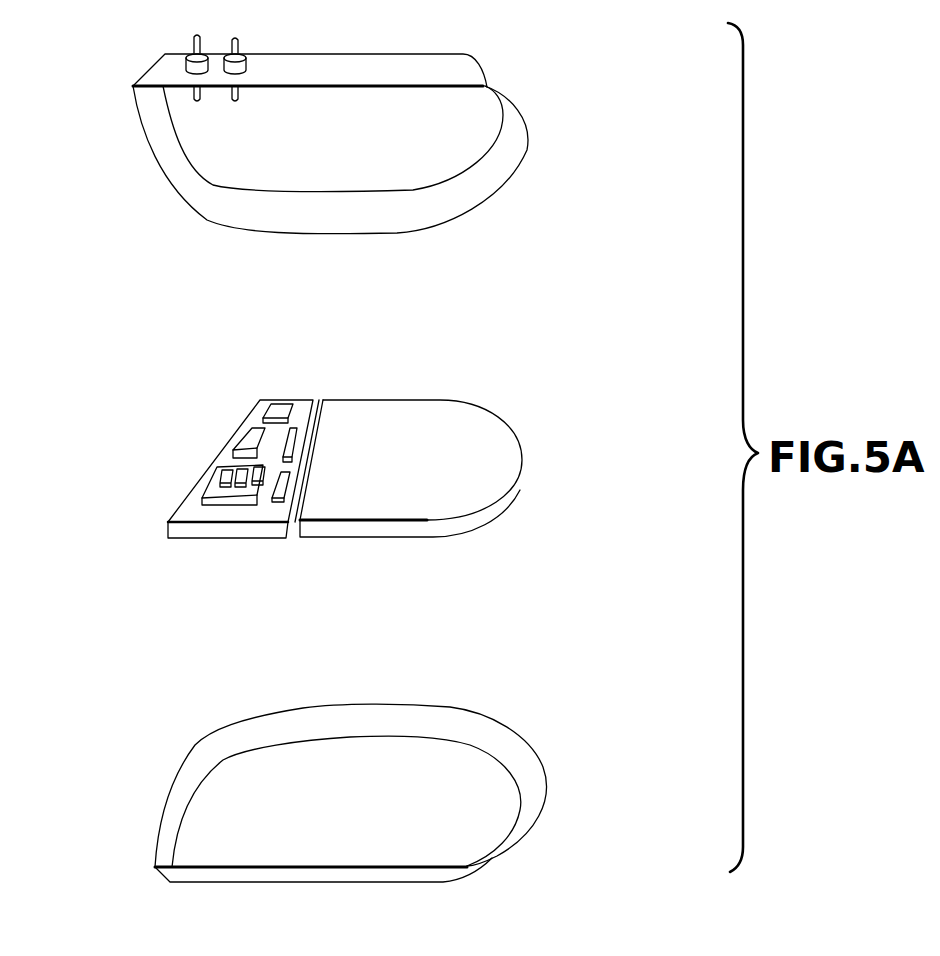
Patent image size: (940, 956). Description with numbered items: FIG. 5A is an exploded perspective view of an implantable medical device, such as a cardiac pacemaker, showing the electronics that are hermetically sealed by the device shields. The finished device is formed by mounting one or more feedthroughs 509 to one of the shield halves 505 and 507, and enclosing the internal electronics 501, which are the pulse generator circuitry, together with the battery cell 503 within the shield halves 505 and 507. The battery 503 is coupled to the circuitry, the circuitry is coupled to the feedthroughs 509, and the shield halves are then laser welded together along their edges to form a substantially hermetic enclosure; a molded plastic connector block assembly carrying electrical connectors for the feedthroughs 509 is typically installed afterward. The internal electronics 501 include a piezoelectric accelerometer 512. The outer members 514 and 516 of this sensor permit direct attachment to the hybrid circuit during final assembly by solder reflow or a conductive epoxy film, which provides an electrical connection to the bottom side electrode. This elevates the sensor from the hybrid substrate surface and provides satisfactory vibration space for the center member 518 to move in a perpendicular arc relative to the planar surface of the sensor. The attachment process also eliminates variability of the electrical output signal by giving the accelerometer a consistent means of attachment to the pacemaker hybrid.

The internal electronics 501 is at (240, 505).
The battery cell 503 is at (493, 452).
The shield half 505 is at (470, 106).
The shield half 507 is at (490, 790).
The feedthroughs 509 is at (190, 52).
The piezoelectric accelerometer 512 is at (202, 506).
The outer member 514 is at (218, 477).
The outer member 516 is at (257, 512).
The center member 518 is at (222, 472).